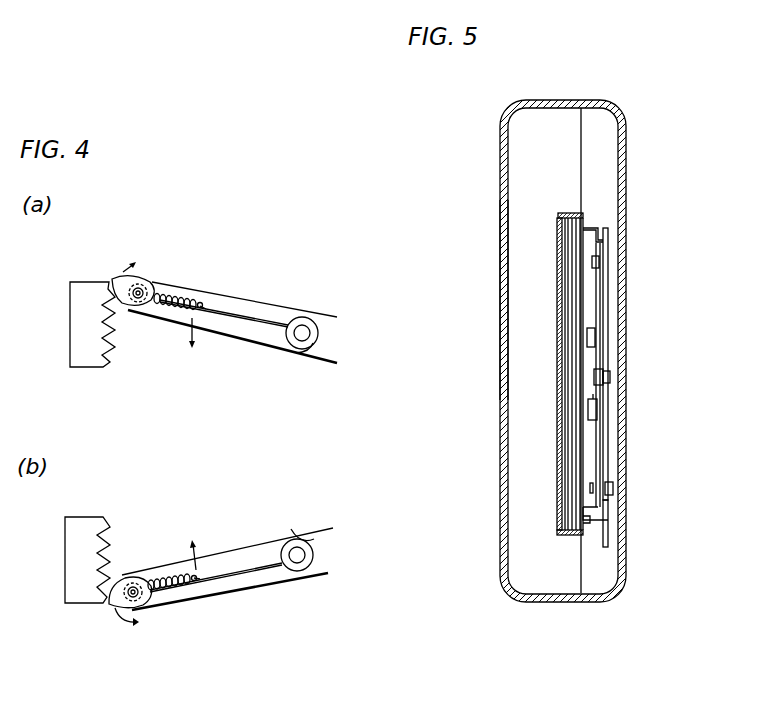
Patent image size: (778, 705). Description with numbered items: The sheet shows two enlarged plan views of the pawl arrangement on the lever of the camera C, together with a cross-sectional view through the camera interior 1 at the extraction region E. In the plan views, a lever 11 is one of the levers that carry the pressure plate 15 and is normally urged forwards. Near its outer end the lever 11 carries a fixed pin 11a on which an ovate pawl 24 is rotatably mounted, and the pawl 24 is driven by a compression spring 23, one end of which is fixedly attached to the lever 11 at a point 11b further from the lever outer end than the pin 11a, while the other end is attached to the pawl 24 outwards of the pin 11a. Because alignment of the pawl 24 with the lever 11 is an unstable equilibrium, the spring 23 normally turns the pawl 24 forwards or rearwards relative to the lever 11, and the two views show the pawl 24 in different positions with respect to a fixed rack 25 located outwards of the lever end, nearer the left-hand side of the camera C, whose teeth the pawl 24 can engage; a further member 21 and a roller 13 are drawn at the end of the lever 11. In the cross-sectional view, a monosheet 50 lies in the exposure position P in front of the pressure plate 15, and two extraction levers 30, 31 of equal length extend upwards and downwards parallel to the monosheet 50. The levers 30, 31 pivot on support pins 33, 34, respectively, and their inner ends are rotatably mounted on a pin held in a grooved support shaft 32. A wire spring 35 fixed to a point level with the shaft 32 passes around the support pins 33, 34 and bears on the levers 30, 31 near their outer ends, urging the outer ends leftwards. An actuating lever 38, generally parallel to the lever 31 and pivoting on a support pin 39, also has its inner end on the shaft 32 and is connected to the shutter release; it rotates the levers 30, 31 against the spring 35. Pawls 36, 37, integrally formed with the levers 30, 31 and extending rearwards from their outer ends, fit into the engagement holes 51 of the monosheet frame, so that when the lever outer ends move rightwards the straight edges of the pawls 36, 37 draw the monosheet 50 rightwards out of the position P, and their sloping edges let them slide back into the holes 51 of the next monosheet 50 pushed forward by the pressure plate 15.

In FIG. 4, the fixed rack 25 is at (70, 343).
In FIG. 4, the ovate pawl 24 is at (120, 279).
In FIG. 4, the fixed pin 11a is at (141, 290).
In FIG. 4, the lever 11 is at (265, 304).
In FIG. 4, the compression spring 23 is at (182, 299).
In FIG. 4, the spring attachment point 11b is at (208, 302).
In FIG. 4, the lever 21 is at (248, 322).
In FIG. 4, the roller 13 is at (295, 356).
In FIG. 5, the apparatus 1 is at (553, 99).
In FIG. 5, the camera C is at (500, 185).
In FIG. 5, the exposure position P is at (582, 130).
In FIG. 5, the extraction mechanism region E is at (595, 190).
In FIG. 5, the monosheet 50 is at (583, 274).
In FIG. 5, the pressure plate 15 is at (558, 325).
In FIG. 5, the engagement holes 51 is at (567, 213).
In FIG. 5, the pawl 36 is at (585, 226).
In FIG. 5, the extraction lever 30 is at (608, 232).
In FIG. 5, the extraction lever 31 is at (601, 450).
In FIG. 5, the wire spring 35 is at (600, 268).
In FIG. 5, the support pin 33 is at (596, 328).
In FIG. 5, the grooved support shaft 32 is at (610, 375).
In FIG. 5, the support pin 34 is at (595, 397).
In FIG. 5, the support pin 39 is at (613, 486).
In FIG. 5, the pawl 37 is at (586, 521).
In FIG. 5, the actuating lever 38 is at (608, 545).